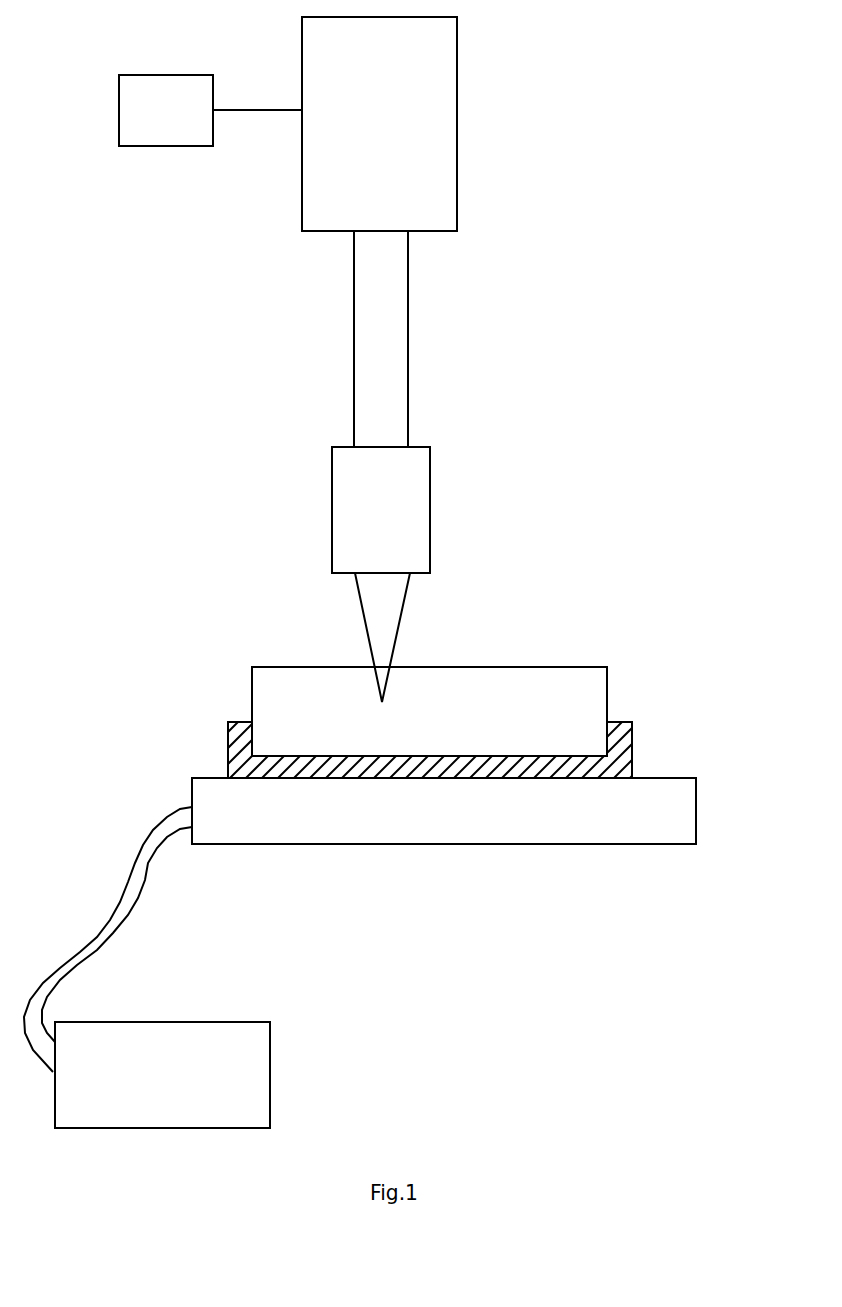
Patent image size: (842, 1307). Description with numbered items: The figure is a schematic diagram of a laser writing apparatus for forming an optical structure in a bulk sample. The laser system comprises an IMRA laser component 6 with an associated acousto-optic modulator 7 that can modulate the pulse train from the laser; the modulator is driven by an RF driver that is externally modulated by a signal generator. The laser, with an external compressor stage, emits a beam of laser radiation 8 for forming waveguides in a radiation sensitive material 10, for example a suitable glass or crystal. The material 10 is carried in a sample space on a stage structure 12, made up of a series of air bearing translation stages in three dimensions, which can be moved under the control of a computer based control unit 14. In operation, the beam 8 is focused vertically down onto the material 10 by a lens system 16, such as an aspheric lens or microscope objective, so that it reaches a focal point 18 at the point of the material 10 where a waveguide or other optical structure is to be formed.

The IMRA u-Jewel D-400 component 6 is at (457, 150).
The acousto-optic modulator 7 is at (168, 147).
The beam of laser radiation 8 is at (408, 375).
The lens system 16 is at (430, 522).
The focal point 18 is at (380, 703).
The radiation sensitive material 10 is at (607, 687).
The stage structure 12 is at (696, 788).
The computer based control unit 14 is at (270, 1083).